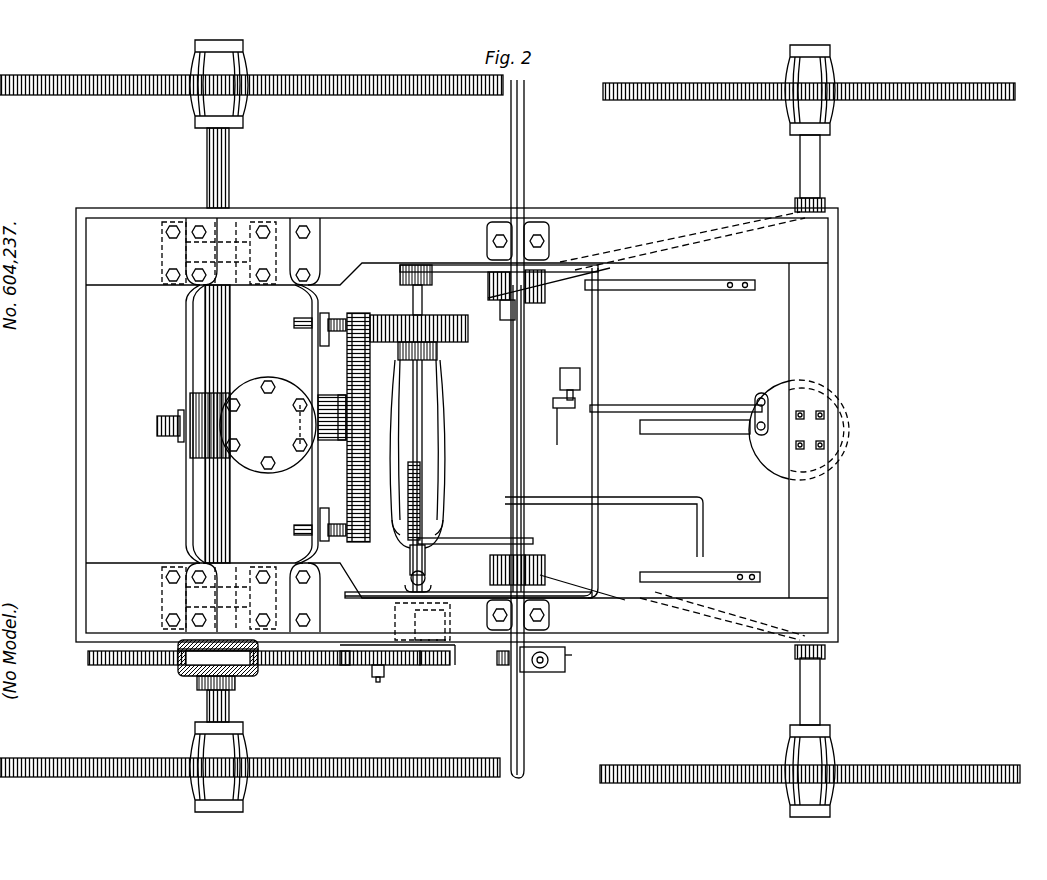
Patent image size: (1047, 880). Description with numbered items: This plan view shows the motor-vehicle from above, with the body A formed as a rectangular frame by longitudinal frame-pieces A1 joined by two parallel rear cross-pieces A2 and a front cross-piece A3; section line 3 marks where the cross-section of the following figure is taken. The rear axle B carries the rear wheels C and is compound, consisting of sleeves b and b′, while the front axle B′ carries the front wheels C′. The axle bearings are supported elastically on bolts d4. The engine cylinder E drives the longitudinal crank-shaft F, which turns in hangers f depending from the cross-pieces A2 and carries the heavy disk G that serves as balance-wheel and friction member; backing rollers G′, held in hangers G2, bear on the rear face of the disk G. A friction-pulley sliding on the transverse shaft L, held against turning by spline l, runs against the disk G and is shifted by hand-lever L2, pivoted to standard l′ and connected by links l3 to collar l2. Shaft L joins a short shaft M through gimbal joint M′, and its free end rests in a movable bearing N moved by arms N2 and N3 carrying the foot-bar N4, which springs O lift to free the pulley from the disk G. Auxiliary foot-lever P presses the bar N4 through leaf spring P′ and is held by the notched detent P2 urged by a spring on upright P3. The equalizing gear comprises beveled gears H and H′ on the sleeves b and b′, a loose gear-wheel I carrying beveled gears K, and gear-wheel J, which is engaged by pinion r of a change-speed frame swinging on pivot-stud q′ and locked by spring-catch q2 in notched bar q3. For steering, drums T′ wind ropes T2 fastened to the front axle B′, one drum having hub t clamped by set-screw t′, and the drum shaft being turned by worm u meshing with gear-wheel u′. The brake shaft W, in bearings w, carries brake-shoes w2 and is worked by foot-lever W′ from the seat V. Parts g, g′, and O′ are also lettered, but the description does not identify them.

The section line 3 is at (470, 800).
The vehicle body A is at (76, 430).
The longitudinal frame-pieces A1 is at (682, 426).
The rear cross-pieces A2 is at (186, 355).
The front cross-piece A3 is at (789, 322).
The bearing bolts d4 is at (165, 237).
The rear axle B is at (229, 180).
The front axle B′ is at (820, 185).
The axle sleeve b is at (230, 327).
The axle sleeve b′ is at (229, 705).
The rear supporting-wheels C is at (357, 97).
The front supporting-wheels C′ is at (900, 100).
The engine cylinder E is at (268, 425).
The crank-shaft F is at (157, 428).
The hanger f is at (305, 386).
The disk G is at (370, 508).
The backing rollers G′ is at (296, 318).
The roller hangers G2 is at (324, 508).
The pinion g is at (372, 448).
The pinion shaft g′ is at (334, 390).
The friction-wheel shaft L is at (418, 298).
The hand-lever L2 is at (424, 492).
The spline l is at (443, 380).
The standard l′ is at (400, 488).
The collar l2 is at (396, 370).
The links l3 is at (393, 412).
The short shaft M is at (404, 586).
The universal joint M′ is at (410, 552).
The movable bearing N is at (400, 278).
The arm N2 is at (455, 264).
The arm N3 is at (490, 572).
The cross rod N4 is at (598, 354).
The winding-drums T′ is at (545, 566).
The steering ropes T2 is at (610, 578).
The drum hub t is at (504, 318).
The set-screw t′ is at (522, 318).
The brake shaft W is at (524, 473).
The brake foot-lever W′ is at (652, 498).
The brake-shaft bearings w is at (549, 237).
The brake-shoes w2 is at (509, 97).
The auxiliary foot-lever P is at (690, 410).
The leaf spring P′ is at (645, 406).
The detent P2 is at (553, 406).
The upright P3 is at (570, 368).
The springs O is at (672, 572).
The bar O′ is at (683, 290).
The gear-wheel I is at (102, 665).
The beveled gear H is at (225, 640).
The beveled gear H′ is at (198, 684).
The beveled gears K is at (178, 673).
The gear-wheel J is at (358, 666).
The gear-pinion r is at (436, 666).
The pivot-stud q′ is at (377, 681).
The spring-catch q2 is at (452, 700).
The notched bar q3 is at (465, 668).
The worm u is at (562, 664).
The worm gear-wheel u′ is at (502, 665).
The seat V is at (541, 670).